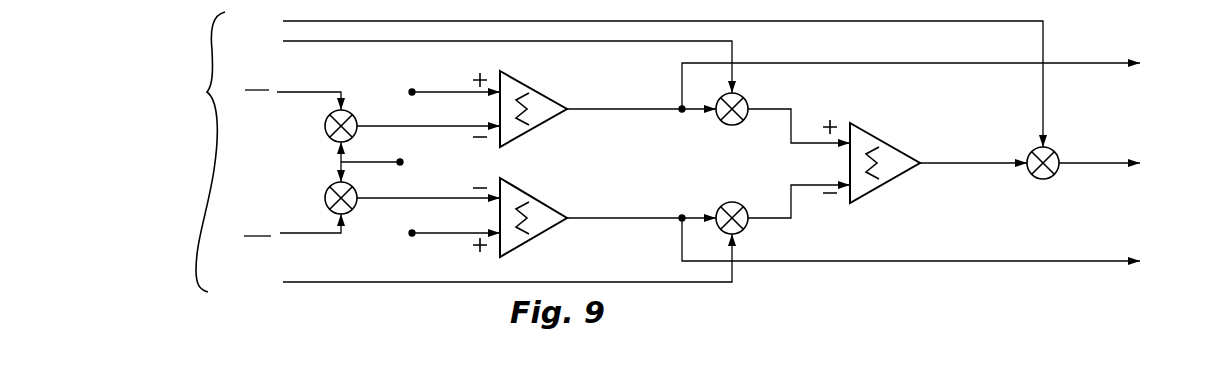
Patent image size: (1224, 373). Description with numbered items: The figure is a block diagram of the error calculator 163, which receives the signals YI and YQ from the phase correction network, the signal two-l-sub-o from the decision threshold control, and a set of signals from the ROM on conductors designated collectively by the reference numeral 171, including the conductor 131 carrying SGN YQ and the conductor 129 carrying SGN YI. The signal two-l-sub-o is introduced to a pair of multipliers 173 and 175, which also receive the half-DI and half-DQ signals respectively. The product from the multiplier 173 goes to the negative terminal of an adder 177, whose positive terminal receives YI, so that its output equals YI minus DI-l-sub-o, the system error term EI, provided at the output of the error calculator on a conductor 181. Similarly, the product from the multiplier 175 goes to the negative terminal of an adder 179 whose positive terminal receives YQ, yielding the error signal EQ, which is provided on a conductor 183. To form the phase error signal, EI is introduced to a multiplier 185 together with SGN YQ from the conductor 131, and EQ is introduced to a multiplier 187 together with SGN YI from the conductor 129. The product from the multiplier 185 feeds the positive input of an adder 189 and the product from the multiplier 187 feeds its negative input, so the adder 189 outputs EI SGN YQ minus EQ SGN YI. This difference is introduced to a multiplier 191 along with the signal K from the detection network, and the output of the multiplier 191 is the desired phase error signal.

The error calculator 163 is at (670, 168).
The conductors 171 is at (205, 92).
The conductor 131 is at (333, 42).
The conductor 129 is at (412, 283).
The multiplier 173 is at (324, 128).
The multiplier 175 is at (326, 193).
The adder 177 is at (546, 98).
The adder 179 is at (520, 191).
The conductor 181 is at (940, 62).
The conductor 183 is at (866, 261).
The multiplier 185 is at (744, 99).
The multiplier 187 is at (729, 202).
The adder 189 is at (879, 138).
The multiplier 191 is at (1056, 155).